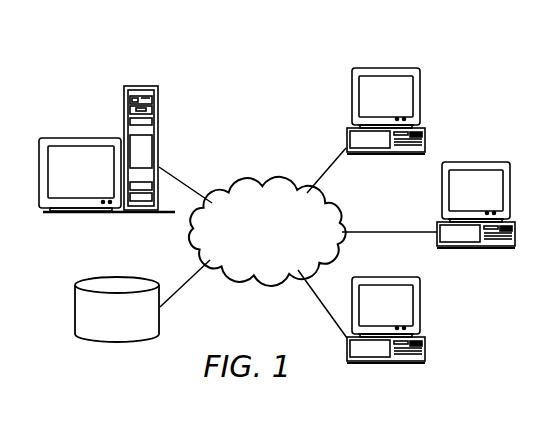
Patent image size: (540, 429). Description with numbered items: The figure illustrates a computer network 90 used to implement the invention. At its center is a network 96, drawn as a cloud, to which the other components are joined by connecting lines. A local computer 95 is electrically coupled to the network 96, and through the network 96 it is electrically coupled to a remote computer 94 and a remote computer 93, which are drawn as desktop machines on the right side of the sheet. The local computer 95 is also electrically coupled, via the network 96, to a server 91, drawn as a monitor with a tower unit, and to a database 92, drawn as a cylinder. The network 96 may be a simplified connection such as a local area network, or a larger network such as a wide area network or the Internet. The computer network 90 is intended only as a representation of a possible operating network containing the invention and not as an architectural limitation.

The computer network 90 is at (228, 83).
The server 91 is at (85, 137).
The database 92 is at (106, 328).
The remote computer 93 is at (387, 361).
The remote computer 94 is at (475, 160).
The local computer 95 is at (385, 67).
The network 96 is at (256, 245).